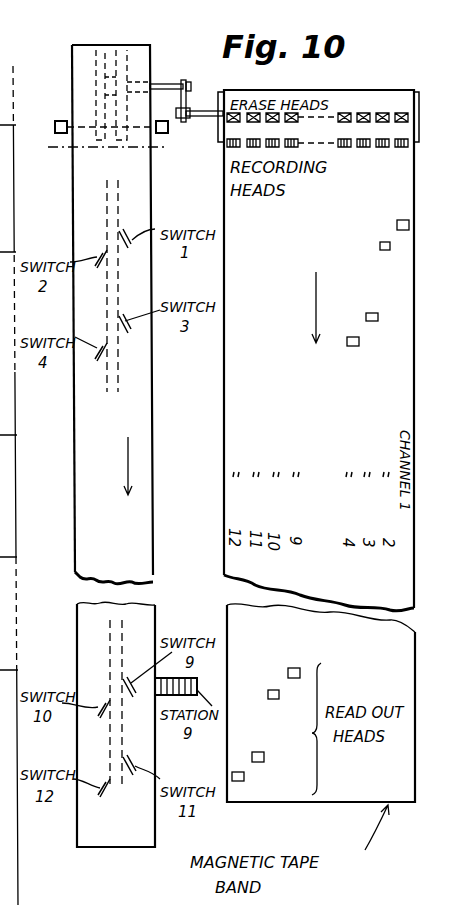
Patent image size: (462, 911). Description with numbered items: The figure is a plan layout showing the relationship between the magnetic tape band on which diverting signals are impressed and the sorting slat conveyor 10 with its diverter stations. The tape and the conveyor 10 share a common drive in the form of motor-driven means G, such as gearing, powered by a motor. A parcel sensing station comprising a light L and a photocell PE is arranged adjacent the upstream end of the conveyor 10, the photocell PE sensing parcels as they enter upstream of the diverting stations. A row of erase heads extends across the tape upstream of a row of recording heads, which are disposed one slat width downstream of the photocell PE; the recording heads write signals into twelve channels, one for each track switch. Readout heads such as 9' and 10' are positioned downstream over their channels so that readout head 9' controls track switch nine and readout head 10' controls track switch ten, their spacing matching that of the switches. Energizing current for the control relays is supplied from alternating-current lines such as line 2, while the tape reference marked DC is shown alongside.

The conveyor 10 is at (106, 300).
The A.C. line 2 is at (9, 475).
The DC reference marker DC is at (3, 605).
The light L is at (55, 125).
The photocell PE is at (168, 128).
The motor-driven means G is at (186, 102).
The readout head 9' is at (303, 664).
The readout head 10' is at (287, 704).